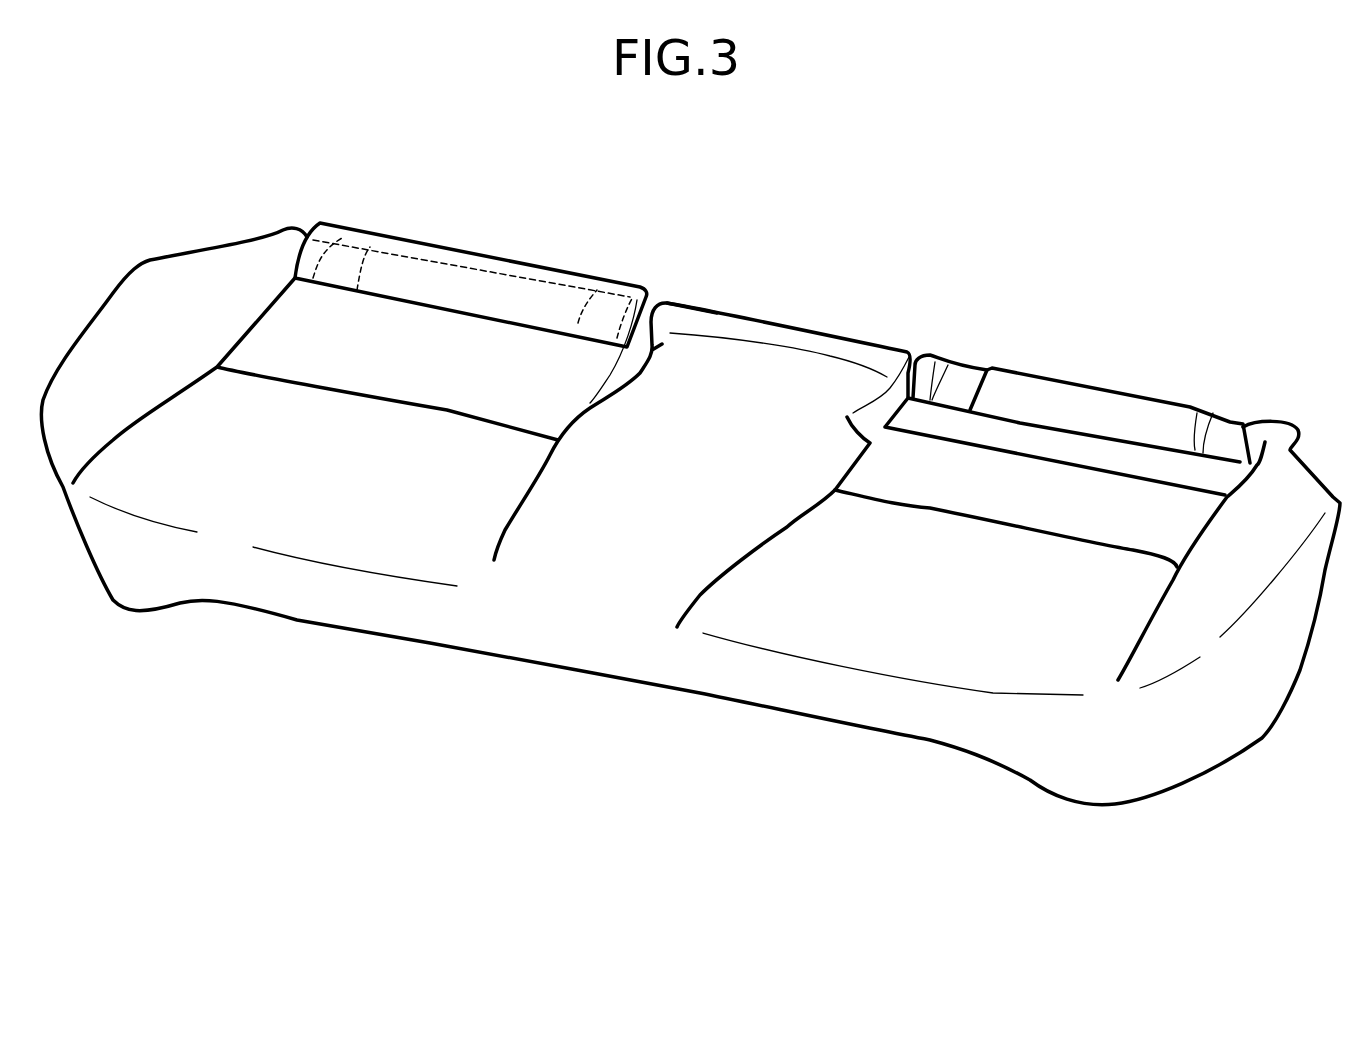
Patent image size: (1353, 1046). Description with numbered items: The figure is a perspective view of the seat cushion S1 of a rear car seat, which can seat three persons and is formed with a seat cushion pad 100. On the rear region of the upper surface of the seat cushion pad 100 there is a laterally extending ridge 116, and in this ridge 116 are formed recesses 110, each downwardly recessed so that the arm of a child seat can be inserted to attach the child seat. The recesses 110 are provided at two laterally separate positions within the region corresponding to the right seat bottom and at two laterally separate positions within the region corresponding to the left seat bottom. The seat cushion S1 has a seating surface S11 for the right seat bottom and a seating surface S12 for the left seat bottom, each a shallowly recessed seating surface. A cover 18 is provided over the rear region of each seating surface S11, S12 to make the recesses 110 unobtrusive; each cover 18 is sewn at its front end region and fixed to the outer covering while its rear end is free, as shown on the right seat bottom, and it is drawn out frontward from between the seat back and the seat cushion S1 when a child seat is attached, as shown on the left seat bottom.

The seat cushion S1 is at (690, 516).
The seat cushion pad 100 is at (589, 680).
The seating surface S11 is at (433, 377).
The seating surface S12 is at (1023, 500).
The cover 18 is at (473, 280).
The recess 110 is at (345, 257).
The ridge 116 is at (1043, 387).